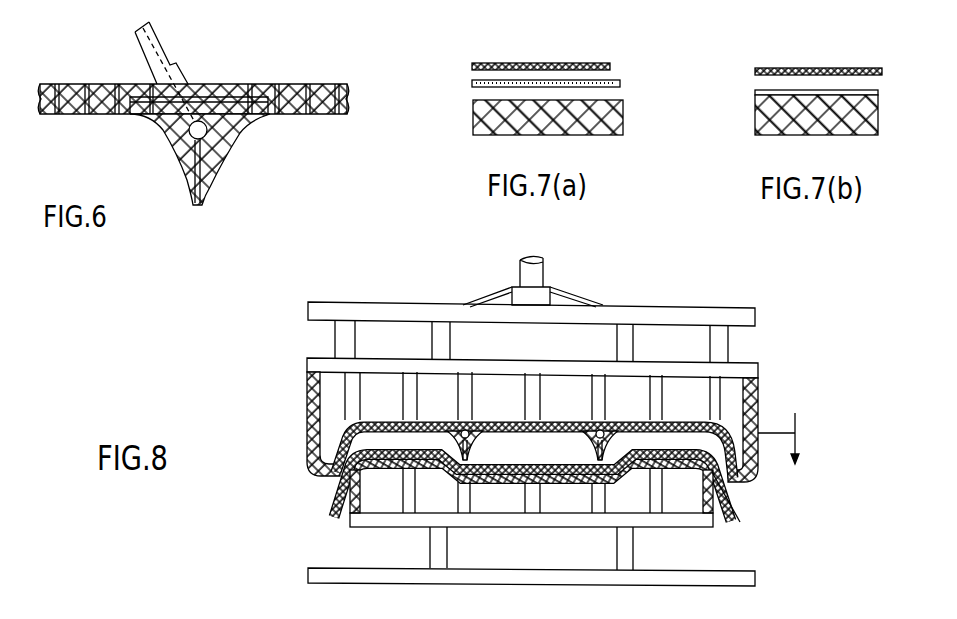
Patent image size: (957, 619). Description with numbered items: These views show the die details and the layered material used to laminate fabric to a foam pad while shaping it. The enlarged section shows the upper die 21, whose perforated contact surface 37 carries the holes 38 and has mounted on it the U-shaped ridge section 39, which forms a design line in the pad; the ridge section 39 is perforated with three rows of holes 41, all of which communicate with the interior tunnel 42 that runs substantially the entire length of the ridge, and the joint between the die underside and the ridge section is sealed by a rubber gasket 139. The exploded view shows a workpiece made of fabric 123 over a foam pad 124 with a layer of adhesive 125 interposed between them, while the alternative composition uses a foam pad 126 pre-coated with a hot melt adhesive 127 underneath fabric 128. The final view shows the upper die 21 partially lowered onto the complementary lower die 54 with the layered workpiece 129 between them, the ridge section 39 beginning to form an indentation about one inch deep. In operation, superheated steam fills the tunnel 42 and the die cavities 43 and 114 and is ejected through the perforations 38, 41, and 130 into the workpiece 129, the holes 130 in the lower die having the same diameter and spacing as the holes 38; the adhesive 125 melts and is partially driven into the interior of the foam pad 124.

In FIG. 8, the upper die 21 is at (300, 428).
In FIG. 6, the contact surface 37 is at (325, 115).
In FIG. 6, the holes 38 is at (118, 115).
In FIG. 8, the holes 38 is at (391, 421).
In FIG. 6, the ridge section 39 is at (237, 133).
In FIG. 8, the ridge section 39 is at (482, 443).
In FIG. 6, the holes 41 is at (203, 207).
In FIG. 6, the interior tunnel 42 is at (192, 136).
In FIG. 8, the interior tunnel 42 is at (472, 424).
In FIG. 8, the die cavity 43 is at (508, 406).
In FIG. 8, the lower die 54 is at (717, 514).
In FIG. 8, the lower die cavity 114 is at (505, 513).
In FIG. 7a, the fabric 123 is at (472, 66).
In FIG. 8, the fabric 123 is at (326, 517).
In FIG. 7a, the foam pad 124 is at (478, 116).
In FIG. 8, the foam pad 124 is at (344, 514).
In FIG. 7a, the adhesive 125 is at (472, 83).
In FIG. 7b, the foam pad 126 is at (757, 123).
In FIG. 7b, the hot melt adhesive 127 is at (760, 90).
In FIG. 7b, the fabric 128 is at (757, 70).
In FIG. 8, the workpiece 129 is at (549, 460).
In FIG. 8, the holes 130 is at (612, 484).
In FIG. 6, the rubber gasket 139 is at (263, 116).